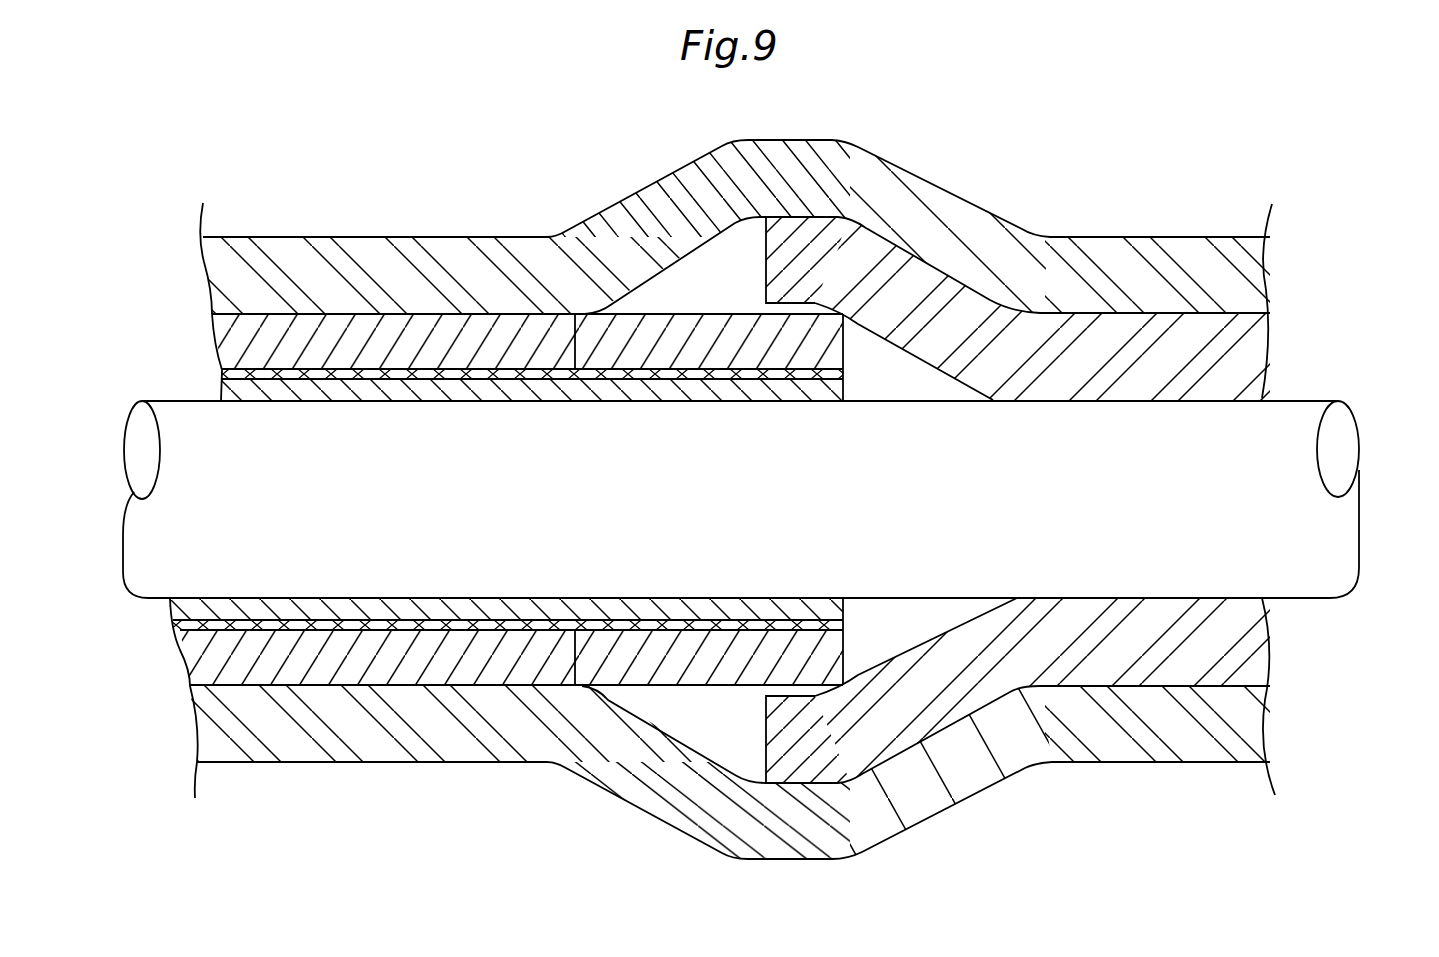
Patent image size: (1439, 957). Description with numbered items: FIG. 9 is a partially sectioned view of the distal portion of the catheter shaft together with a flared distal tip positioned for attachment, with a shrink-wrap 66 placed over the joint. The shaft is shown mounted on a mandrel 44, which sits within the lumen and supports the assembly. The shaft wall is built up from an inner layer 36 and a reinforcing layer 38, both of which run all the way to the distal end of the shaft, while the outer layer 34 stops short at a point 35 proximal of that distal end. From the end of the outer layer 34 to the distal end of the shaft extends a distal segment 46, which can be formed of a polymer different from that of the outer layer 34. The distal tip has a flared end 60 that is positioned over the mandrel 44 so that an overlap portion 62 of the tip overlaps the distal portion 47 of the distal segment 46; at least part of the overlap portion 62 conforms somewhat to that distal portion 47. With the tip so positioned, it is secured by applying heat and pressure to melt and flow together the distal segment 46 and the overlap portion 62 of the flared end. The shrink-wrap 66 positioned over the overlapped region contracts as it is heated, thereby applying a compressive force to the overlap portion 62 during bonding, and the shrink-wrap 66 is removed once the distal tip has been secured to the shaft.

The outer layer 34 is at (293, 337).
The point proximal of the distal end 35 is at (594, 313).
The inner layer 36 is at (329, 402).
The reinforcing layer 38 is at (220, 373).
The mandrel 44 is at (1322, 546).
The distal segment 46 is at (680, 313).
The distal portion of the distal segment 47 is at (815, 303).
The flared end 60 is at (984, 178).
The overlap portion 62 is at (798, 246).
The shrink-wrap 66 is at (1163, 247).